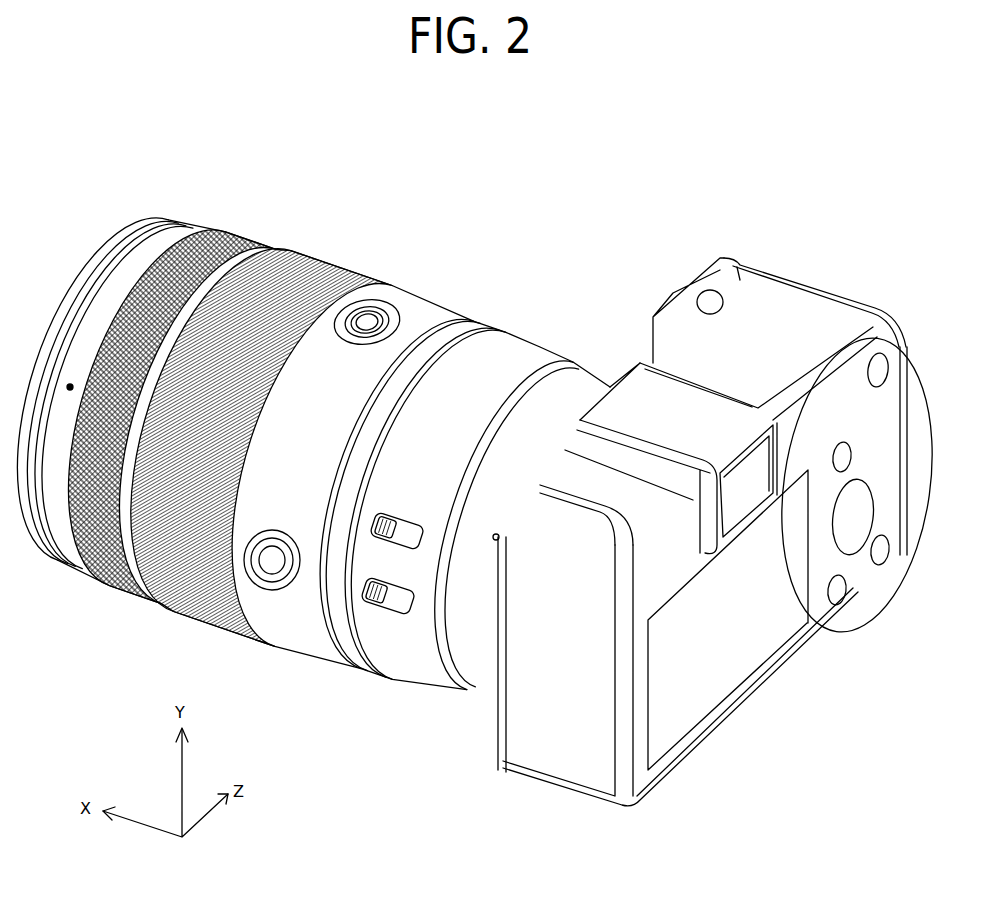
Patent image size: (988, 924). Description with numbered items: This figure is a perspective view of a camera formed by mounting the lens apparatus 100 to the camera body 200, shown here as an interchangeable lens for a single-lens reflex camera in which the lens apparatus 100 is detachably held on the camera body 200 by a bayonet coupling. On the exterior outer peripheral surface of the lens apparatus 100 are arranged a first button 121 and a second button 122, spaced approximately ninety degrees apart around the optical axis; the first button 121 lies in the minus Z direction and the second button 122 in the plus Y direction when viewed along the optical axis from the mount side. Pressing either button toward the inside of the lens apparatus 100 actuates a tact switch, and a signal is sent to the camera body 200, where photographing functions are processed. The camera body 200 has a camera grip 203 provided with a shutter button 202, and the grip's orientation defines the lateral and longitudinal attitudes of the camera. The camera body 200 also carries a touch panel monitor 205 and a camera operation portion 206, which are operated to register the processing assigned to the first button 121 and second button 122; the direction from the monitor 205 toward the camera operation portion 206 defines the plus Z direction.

The lens apparatus 100 is at (313, 417).
The first button 121 is at (273, 557).
The second button 122 is at (370, 317).
The camera body 200 is at (721, 529).
The shutter button 202 is at (683, 283).
The camera grip 203 is at (743, 288).
The touch panel monitor 205 is at (687, 713).
The camera operation portion 206 is at (877, 603).